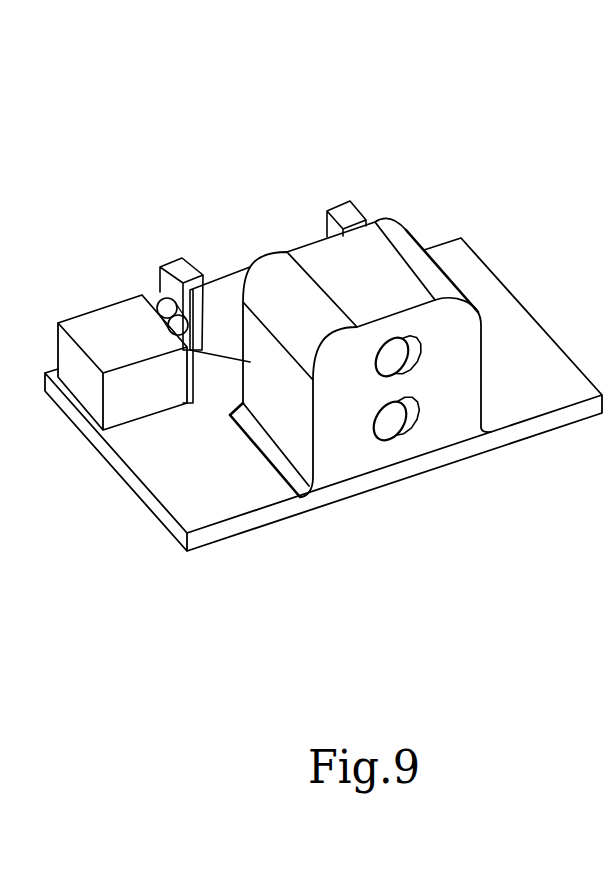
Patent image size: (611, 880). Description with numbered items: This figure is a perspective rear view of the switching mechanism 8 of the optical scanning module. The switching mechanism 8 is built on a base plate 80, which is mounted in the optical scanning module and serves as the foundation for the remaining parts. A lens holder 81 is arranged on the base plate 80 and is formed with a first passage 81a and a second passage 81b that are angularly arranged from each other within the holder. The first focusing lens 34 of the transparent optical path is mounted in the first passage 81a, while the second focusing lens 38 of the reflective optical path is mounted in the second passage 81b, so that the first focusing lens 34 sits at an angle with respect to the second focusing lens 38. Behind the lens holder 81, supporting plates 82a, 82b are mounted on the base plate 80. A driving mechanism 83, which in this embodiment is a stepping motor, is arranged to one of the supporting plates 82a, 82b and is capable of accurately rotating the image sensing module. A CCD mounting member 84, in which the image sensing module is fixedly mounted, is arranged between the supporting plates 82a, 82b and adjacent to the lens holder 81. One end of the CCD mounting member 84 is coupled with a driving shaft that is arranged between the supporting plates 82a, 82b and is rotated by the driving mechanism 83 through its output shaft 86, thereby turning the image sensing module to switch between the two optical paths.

The switching mechanism 8 is at (397, 130).
The base plate 80 is at (217, 510).
The lens holder 81 is at (403, 347).
The first passage 81a is at (417, 363).
The second passage 81b is at (412, 422).
The supporting plate 82a is at (170, 262).
The supporting plate 82b is at (338, 212).
The driving mechanism 83 is at (103, 323).
The CCD mounting member 84 is at (233, 285).
The output shaft 86 is at (175, 322).
The first focusing lens 34 is at (402, 354).
The second focusing lens 38 is at (386, 425).